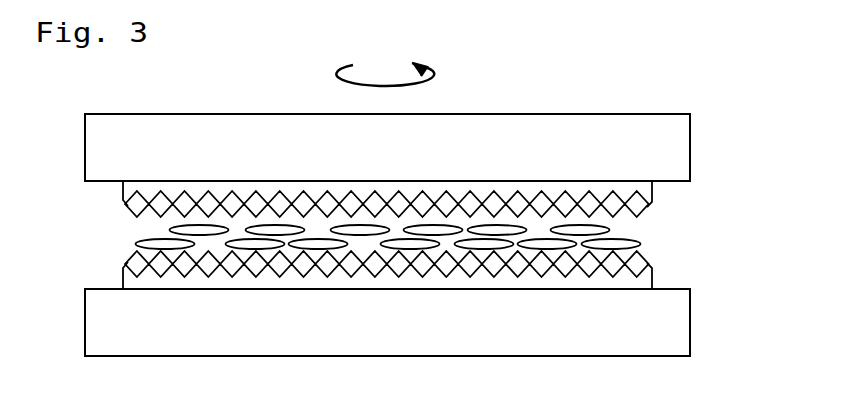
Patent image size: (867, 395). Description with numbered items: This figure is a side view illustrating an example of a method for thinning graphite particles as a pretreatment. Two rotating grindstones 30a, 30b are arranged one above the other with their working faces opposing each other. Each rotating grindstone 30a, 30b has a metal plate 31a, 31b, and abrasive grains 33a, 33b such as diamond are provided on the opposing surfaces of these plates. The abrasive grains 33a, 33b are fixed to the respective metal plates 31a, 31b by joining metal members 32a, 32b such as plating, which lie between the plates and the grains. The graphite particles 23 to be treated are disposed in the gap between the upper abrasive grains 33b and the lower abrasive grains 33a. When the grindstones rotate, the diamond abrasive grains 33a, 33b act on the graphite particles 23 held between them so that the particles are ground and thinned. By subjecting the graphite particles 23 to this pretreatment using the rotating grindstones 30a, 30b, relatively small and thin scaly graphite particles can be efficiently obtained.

The graphite particles 23 is at (622, 240).
The rotating grindstone 30a is at (448, 302).
The rotating grindstone 30b is at (448, 168).
The metal plate 31a is at (422, 322).
The metal plate 31b is at (682, 147).
The joining metal member 32a is at (652, 277).
The joining metal member 32b is at (650, 191).
The abrasive grains 33a is at (643, 258).
The abrasive grains 33b is at (442, 206).